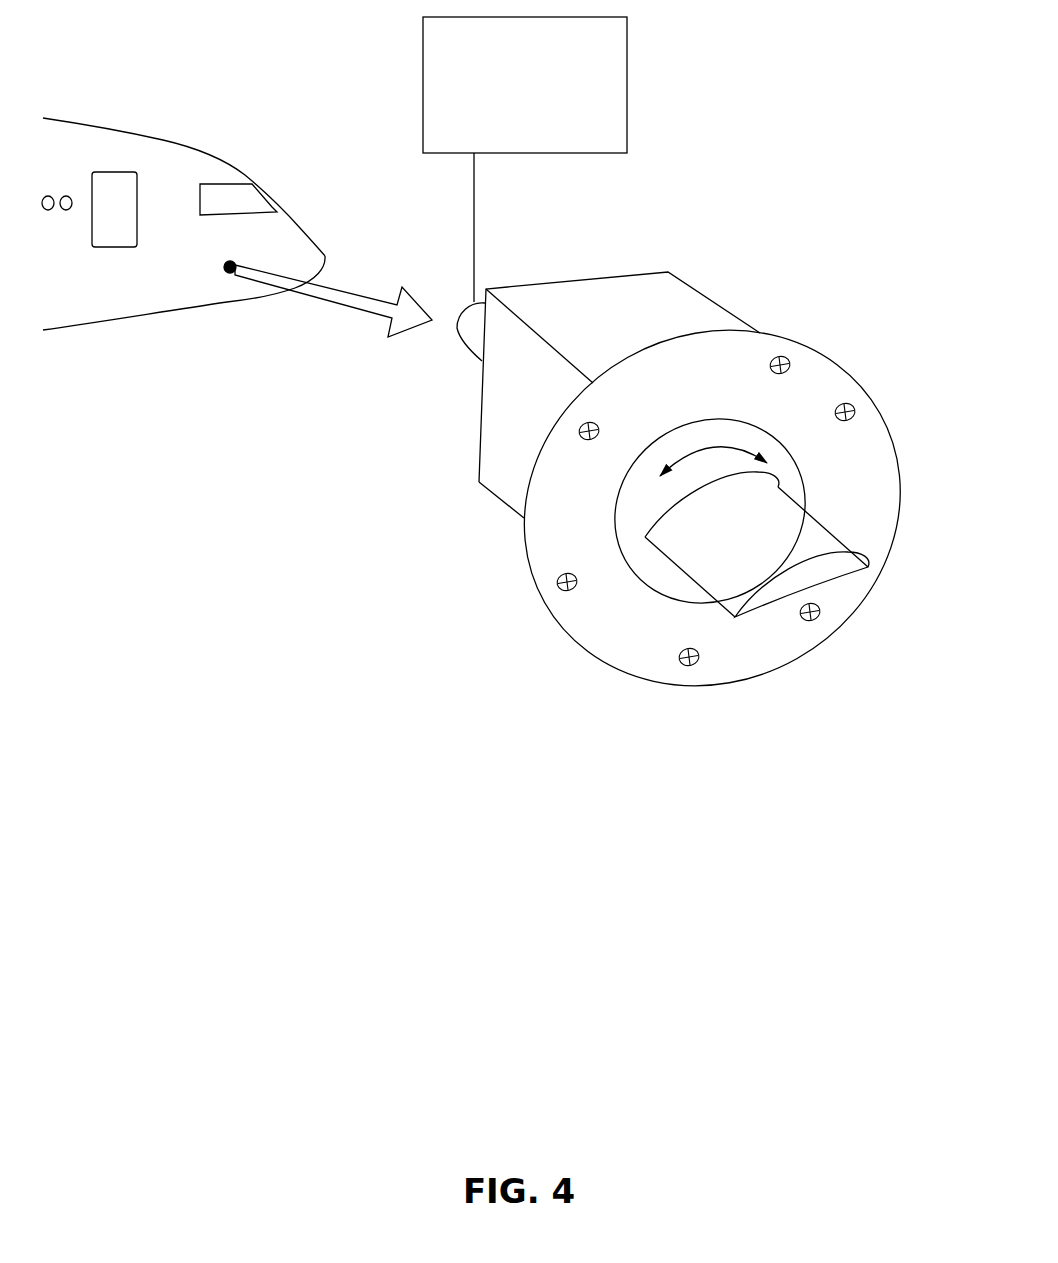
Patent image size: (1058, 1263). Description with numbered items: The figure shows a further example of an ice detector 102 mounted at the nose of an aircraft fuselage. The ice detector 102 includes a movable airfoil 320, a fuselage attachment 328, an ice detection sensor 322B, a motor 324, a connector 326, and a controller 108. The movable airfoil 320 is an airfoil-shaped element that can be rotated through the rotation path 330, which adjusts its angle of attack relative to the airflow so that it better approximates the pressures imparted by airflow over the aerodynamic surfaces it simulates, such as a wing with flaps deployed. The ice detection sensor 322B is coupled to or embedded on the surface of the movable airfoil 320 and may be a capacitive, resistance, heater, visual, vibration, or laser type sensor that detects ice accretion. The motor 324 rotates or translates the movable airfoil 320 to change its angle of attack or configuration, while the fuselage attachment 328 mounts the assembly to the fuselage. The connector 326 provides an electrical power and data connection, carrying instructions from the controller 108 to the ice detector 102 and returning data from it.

The ice detector 102 is at (229, 276).
The controller 108 is at (525, 159).
The connector 326 is at (462, 300).
The motor 324 is at (601, 274).
The fuselage attachment 328 is at (773, 331).
The movable airfoil 320 is at (669, 568).
The ice detection sensor 322B is at (816, 512).
The rotation path 330 is at (713, 462).